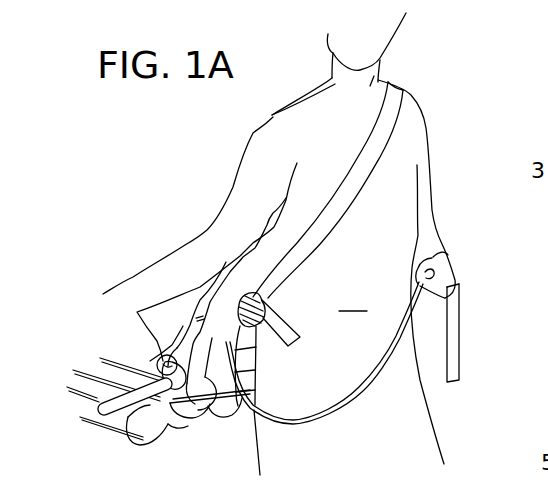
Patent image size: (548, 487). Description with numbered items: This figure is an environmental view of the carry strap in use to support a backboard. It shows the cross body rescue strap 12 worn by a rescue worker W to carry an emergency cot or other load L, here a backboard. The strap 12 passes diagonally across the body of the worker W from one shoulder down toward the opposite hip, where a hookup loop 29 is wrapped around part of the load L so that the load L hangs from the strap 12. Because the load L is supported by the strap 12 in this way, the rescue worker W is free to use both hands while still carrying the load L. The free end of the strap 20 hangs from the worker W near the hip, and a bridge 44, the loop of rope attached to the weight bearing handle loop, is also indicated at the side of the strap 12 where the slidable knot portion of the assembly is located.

The cross body rescue strap 12 is at (333, 142).
The hookup loop 29 is at (152, 358).
The end of the strap 20 is at (461, 321).
The bridge 44 is at (547, 247).
The rescue worker W is at (279, 238).
The load L is at (128, 418).